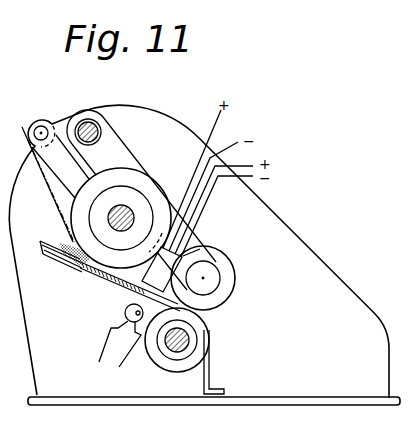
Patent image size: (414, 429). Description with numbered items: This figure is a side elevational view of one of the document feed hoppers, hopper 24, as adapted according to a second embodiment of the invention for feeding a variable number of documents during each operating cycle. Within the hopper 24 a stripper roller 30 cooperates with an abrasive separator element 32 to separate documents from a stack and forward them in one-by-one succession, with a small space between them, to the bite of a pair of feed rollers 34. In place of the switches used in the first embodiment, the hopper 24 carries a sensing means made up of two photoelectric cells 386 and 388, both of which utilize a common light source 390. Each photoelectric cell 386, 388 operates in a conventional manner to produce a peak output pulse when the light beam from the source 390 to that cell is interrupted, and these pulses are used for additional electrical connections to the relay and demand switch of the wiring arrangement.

The hopper 24 is at (299, 229).
The stripper roller 30 is at (133, 168).
The abrasive separator element 32 is at (64, 241).
The feed rollers 34 is at (233, 288).
The photoelectric cell 386 is at (123, 273).
The photoelectric cell 388 is at (142, 287).
The light source 390 is at (126, 316).